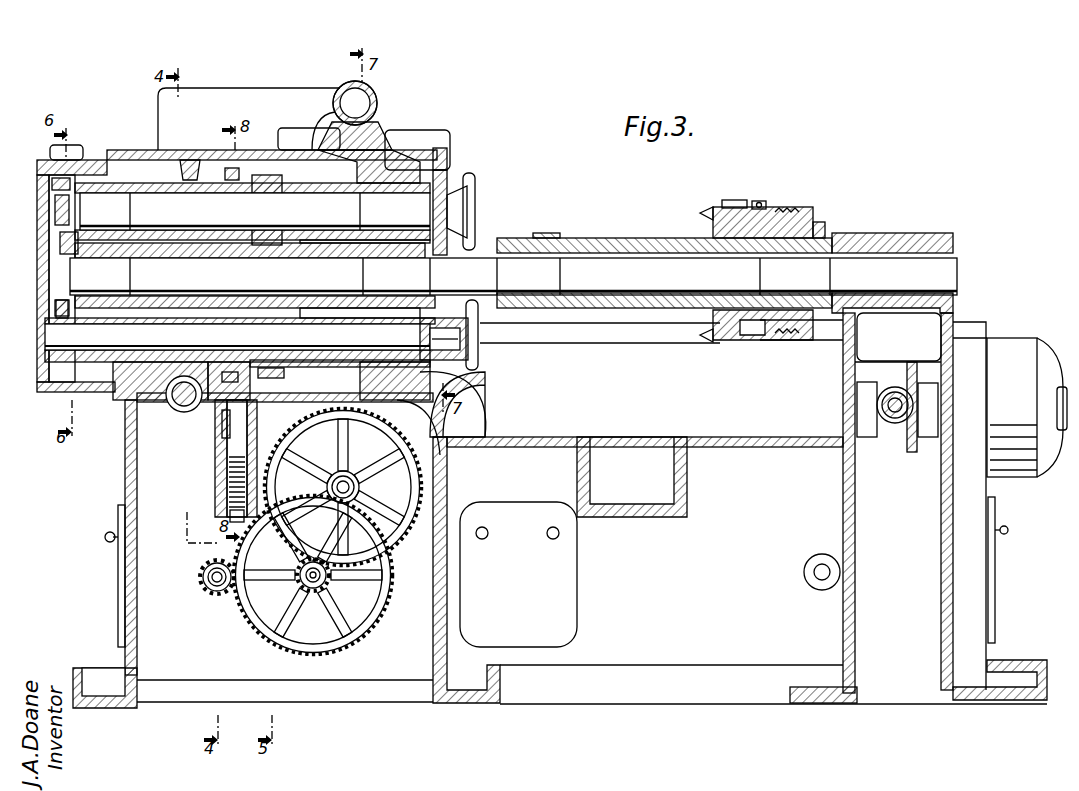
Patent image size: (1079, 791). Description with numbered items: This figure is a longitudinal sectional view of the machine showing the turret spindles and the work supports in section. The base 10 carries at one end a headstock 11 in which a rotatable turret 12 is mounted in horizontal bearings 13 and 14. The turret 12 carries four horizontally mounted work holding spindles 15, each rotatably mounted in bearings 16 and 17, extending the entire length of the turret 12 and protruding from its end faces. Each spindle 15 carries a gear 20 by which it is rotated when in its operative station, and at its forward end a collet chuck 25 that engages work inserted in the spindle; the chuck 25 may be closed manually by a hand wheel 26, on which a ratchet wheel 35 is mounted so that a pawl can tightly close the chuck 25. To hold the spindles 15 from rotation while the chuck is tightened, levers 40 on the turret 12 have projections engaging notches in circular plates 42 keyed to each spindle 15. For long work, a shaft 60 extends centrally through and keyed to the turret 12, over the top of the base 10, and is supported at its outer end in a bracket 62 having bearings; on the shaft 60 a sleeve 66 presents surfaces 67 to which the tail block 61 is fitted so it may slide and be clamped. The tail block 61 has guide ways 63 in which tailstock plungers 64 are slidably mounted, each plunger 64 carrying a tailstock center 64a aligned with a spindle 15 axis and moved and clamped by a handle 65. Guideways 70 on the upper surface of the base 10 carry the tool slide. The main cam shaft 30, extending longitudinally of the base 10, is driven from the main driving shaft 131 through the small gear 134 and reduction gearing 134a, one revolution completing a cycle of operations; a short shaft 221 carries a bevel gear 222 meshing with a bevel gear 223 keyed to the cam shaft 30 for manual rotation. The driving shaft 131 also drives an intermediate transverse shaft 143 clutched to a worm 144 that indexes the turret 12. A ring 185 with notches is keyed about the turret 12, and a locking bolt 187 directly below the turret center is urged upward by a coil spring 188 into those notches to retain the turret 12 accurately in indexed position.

The base 10 is at (848, 615).
The headstock 11 is at (136, 154).
The turret 12 is at (78, 252).
The horizontal bearing 13 is at (124, 392).
The horizontal bearing 14 is at (382, 158).
The work holding spindle 15 is at (60, 222).
The bearing 16 is at (125, 235).
The bearing 17 is at (372, 243).
The gear 20 is at (262, 175).
The collet chuck 25 is at (470, 345).
The hand wheel 26 is at (473, 186).
The main cam shaft 30 is at (1056, 430).
The ratchet wheel 35 is at (470, 224).
The lever 40 is at (55, 210).
The circular plate 42 is at (58, 312).
The shaft 60 is at (85, 272).
The tail block 61 is at (808, 232).
The bracket 62 is at (941, 236).
The guide way 63 is at (776, 210).
The tailstock plunger 64 is at (735, 203).
The tailstock center 64a is at (698, 360).
The handle 65 is at (758, 203).
The sleeve 66 is at (586, 240).
The surface 67 is at (541, 236).
The guideway 70 is at (592, 340).
The main driving shaft 131 is at (217, 592).
The small gear 134 is at (203, 583).
The reduction gearing 134a is at (412, 480).
The intermediate transverse shaft 143 is at (186, 410).
The worm 144 is at (173, 406).
The ring 185 is at (230, 168).
The locking bolt 187 is at (228, 442).
The coil spring 188 is at (232, 478).
The short shaft 221 is at (891, 424).
The bevel gear 222 is at (878, 400).
The bevel gear 223 is at (912, 452).